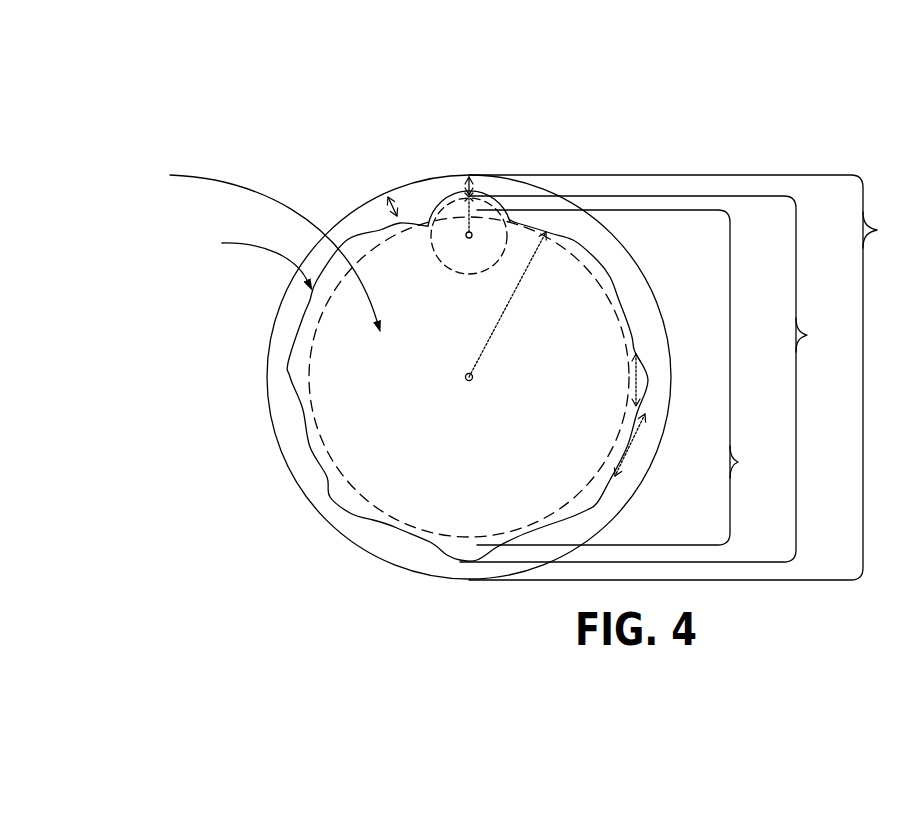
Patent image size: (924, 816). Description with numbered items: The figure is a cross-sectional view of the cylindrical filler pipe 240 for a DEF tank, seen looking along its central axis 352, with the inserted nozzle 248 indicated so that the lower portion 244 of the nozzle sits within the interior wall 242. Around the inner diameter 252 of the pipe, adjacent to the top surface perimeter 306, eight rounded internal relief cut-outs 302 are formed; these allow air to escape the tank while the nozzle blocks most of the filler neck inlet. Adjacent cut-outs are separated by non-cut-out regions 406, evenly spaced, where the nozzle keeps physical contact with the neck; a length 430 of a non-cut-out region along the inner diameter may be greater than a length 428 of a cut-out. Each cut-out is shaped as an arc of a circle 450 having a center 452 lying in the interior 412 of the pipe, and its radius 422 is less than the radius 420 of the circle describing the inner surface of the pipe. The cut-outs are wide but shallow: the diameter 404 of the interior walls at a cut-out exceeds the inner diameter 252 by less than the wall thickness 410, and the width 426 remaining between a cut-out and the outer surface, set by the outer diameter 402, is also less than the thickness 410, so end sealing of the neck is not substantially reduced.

The outer diameter 402 is at (692, 377).
The diameter of the interior walls at a cut-out 404 is at (657, 379).
The inner diameter 252 is at (626, 377).
The filler pipe 240 is at (368, 217).
The cut-outs 302 is at (297, 350).
The radius of circle describing cut-out 422 is at (453, 216).
The radius of circle describing inner surface 420 is at (507, 315).
The central axis 352 is at (473, 379).
The circle 450 is at (441, 262).
The center 452 is at (472, 238).
The width 426 is at (472, 197).
The nozzle 248 is at (428, 224).
The wall thickness 410 is at (400, 208).
The interior 412 is at (254, 242).
The top surface perimeter 306 is at (246, 256).
The non-cut-out regions 406 is at (315, 306).
The lower portion of nozzle 244 is at (268, 391).
The interior wall 242 is at (622, 305).
The length of cut-outs 428 is at (632, 386).
The length of non-cut-out regions 430 is at (627, 445).